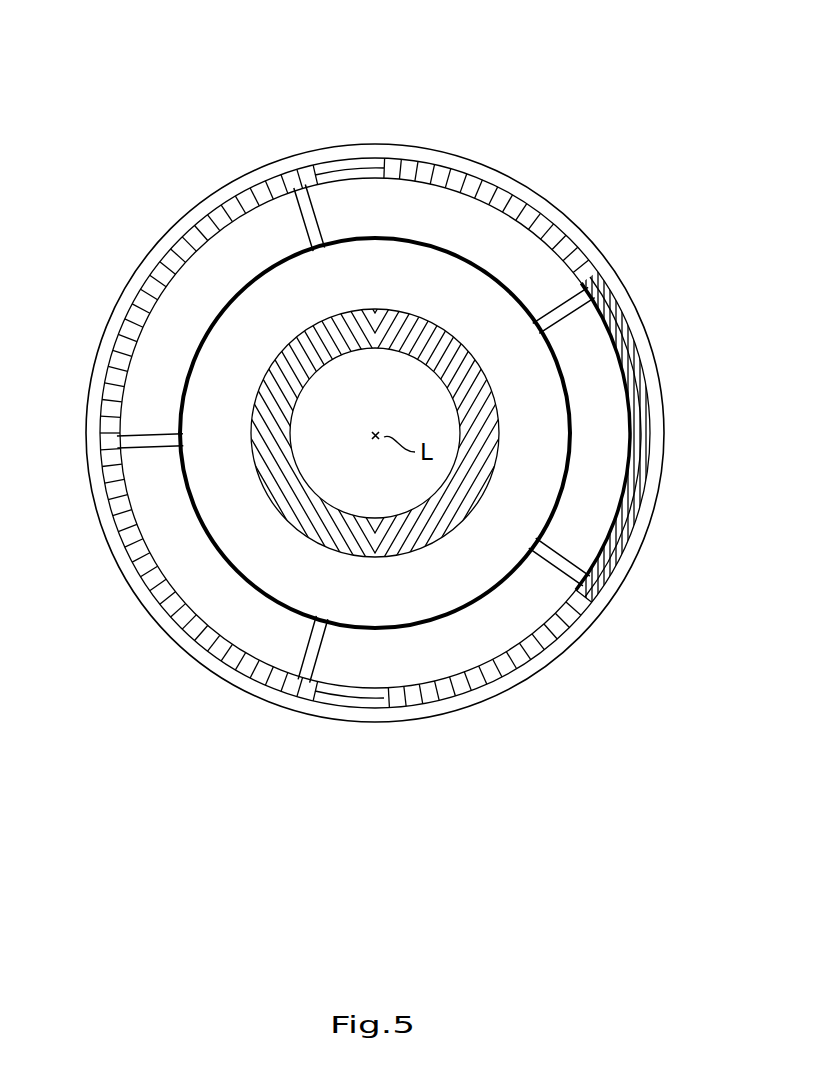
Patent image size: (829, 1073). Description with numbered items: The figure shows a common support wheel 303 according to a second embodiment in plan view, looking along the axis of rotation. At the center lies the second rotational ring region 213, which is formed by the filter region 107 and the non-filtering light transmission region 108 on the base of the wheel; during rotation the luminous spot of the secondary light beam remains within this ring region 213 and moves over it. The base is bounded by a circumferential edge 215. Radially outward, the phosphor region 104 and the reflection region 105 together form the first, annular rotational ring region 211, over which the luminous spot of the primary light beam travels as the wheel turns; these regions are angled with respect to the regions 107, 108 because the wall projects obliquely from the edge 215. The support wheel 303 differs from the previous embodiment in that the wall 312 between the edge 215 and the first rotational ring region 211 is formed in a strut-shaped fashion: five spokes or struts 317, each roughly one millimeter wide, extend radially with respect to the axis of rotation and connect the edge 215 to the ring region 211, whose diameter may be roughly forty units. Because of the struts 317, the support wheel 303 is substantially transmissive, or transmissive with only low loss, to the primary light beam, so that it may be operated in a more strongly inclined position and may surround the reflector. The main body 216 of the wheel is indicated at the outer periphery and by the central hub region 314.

The common support wheel 303 is at (592, 118).
The spokes or struts 317 is at (314, 210).
The disc body 314 is at (280, 313).
The first rotational ring region 211 is at (414, 433).
The phosphor region 104 is at (133, 322).
The reflection region 105 is at (642, 405).
The main body 216 is at (573, 222).
The circumferential edge 215 is at (555, 518).
The second rotational ring region 213 is at (408, 460).
The filter region 107 is at (278, 453).
The non-filtering light transmission region 108 is at (488, 440).
The wall 312 is at (518, 640).